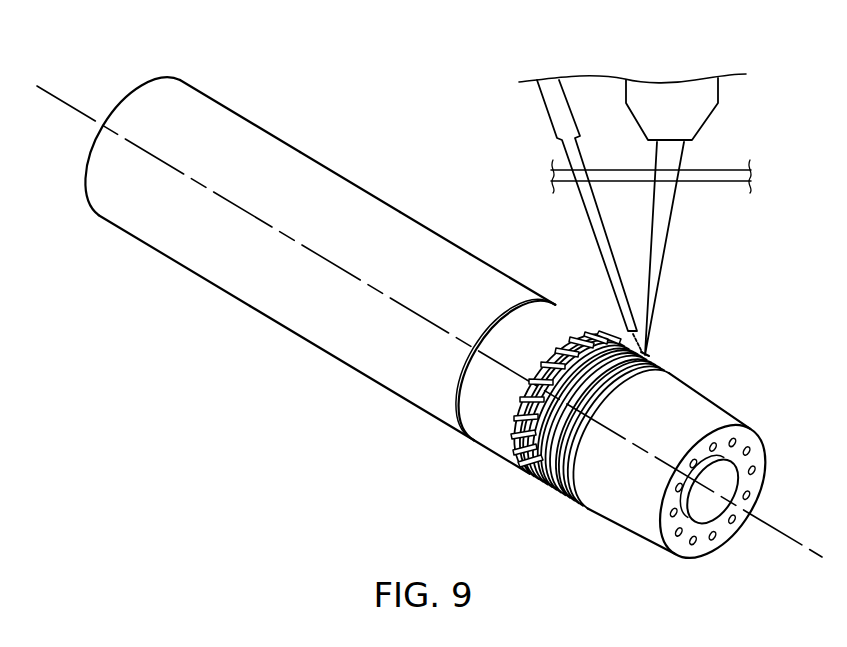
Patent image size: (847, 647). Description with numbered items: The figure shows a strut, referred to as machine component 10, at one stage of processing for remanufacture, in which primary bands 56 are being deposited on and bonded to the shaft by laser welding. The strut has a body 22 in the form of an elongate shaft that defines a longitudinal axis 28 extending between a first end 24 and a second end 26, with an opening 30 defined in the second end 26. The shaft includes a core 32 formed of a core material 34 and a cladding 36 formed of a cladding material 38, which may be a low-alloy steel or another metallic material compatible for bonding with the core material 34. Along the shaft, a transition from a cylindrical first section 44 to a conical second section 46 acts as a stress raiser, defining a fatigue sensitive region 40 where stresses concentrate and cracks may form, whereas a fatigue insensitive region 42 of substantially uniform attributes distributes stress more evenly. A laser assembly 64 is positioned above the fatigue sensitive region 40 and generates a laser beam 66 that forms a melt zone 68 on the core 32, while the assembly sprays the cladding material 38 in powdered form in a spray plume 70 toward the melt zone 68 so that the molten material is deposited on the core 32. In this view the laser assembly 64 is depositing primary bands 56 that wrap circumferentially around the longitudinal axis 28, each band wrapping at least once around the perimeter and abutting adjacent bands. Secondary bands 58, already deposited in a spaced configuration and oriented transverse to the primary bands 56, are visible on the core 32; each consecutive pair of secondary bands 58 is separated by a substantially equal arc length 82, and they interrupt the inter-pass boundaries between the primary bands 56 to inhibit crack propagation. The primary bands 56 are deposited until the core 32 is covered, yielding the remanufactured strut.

The machine component 10 is at (359, 70).
The body 22 is at (485, 262).
The first end 24 is at (150, 80).
The second end 26 is at (766, 449).
The longitudinal axis 28 is at (56, 85).
The opening 30 is at (747, 487).
The core 32 is at (574, 336).
The core material 34 is at (556, 320).
The cladding 36 is at (246, 120).
The cladding material 38 is at (288, 164).
The fatigue sensitive region 40 is at (516, 504).
The fatigue insensitive region 42 is at (181, 282).
The first section 44 is at (432, 230).
The second section 46 is at (730, 412).
The primary bands 56 is at (544, 484).
The secondary bands 58 is at (514, 458).
The laser assembly 64 is at (596, 74).
The laser beam 66 is at (670, 242).
The melt zone 68 is at (651, 353).
The spray plume 70 is at (582, 220).
The arc length 82 is at (558, 335).